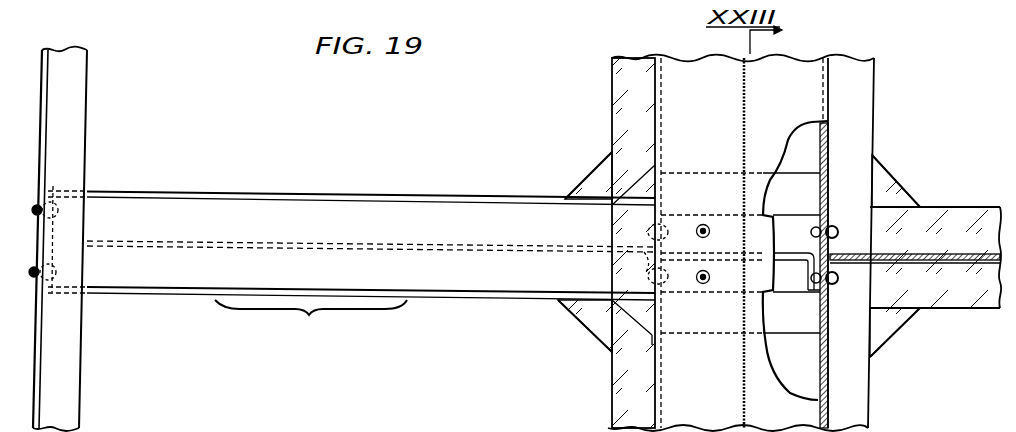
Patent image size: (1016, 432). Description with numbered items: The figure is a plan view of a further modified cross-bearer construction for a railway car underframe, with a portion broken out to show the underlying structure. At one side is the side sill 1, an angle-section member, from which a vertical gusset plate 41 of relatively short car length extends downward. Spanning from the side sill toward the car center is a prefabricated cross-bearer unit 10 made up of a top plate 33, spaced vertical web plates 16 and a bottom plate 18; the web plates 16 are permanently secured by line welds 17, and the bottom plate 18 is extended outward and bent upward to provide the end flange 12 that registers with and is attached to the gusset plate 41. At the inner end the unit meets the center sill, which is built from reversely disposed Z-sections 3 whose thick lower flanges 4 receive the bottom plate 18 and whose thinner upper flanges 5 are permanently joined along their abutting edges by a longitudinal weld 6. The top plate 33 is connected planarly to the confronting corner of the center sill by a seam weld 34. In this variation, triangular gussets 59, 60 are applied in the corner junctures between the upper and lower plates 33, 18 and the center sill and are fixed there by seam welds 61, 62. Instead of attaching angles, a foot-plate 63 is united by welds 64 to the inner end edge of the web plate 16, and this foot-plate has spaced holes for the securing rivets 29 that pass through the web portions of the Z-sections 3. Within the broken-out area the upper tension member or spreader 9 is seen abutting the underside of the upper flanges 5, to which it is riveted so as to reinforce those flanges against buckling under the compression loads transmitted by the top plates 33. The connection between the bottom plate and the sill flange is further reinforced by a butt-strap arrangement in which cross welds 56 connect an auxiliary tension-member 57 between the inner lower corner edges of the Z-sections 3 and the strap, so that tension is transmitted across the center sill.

The side sill 1 is at (88, 82).
The Z-sections 3 is at (676, 62).
The lower flanges 4 is at (624, 88).
The upper flanges 5 is at (795, 270).
The longitudinal weld 6 is at (747, 101).
The tension member 9 is at (768, 213).
The unit 10 is at (371, 314).
The end flange 12 is at (57, 239).
The web plate 16 is at (362, 240).
The line welds 17 is at (54, 238).
The bottom plate 18 is at (430, 196).
The rivets 29 is at (670, 272).
The top plate 33 is at (306, 198).
The seam weld 34 is at (646, 263).
The gusset plate 41 is at (50, 160).
The cross welds 56 is at (670, 191).
The auxiliary tension-member 57 is at (699, 168).
The triangular gusset 59 is at (628, 185).
The triangular gusset 60 is at (596, 176).
The seam weld 61 is at (633, 266).
The seam weld 62 is at (582, 197).
The foot-plate 63 is at (832, 212).
The welds 64 is at (652, 242).